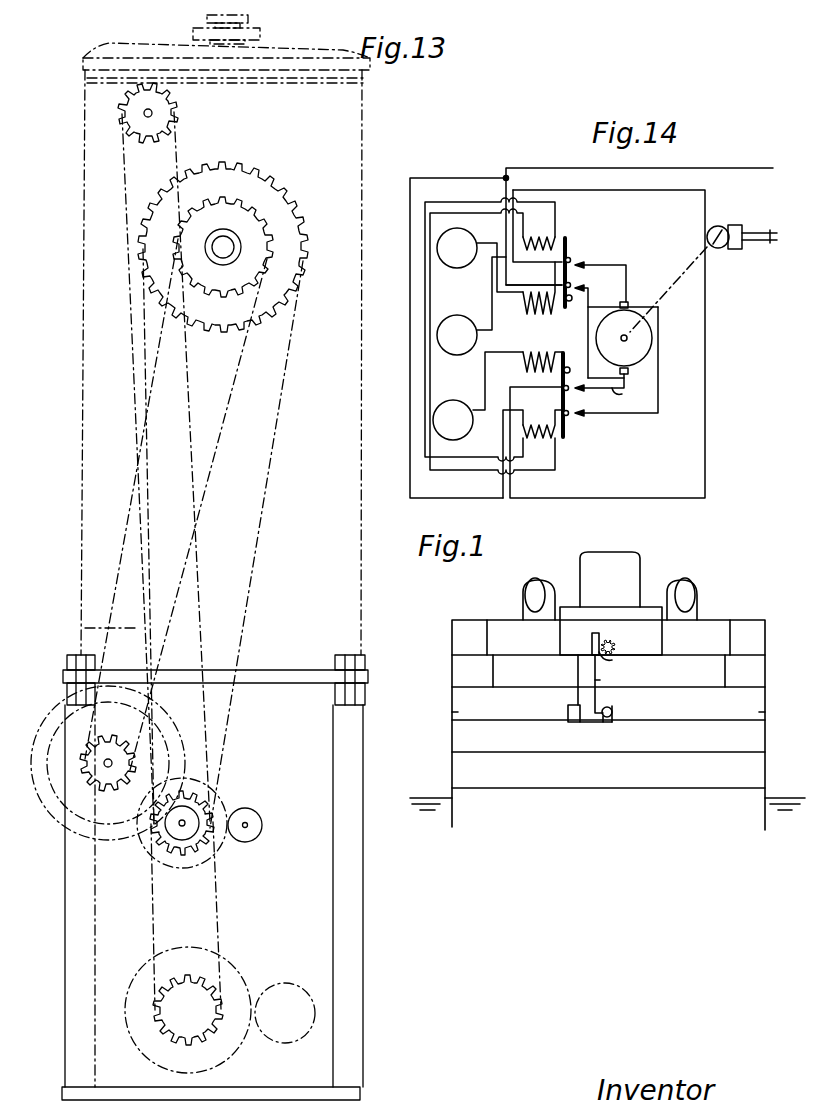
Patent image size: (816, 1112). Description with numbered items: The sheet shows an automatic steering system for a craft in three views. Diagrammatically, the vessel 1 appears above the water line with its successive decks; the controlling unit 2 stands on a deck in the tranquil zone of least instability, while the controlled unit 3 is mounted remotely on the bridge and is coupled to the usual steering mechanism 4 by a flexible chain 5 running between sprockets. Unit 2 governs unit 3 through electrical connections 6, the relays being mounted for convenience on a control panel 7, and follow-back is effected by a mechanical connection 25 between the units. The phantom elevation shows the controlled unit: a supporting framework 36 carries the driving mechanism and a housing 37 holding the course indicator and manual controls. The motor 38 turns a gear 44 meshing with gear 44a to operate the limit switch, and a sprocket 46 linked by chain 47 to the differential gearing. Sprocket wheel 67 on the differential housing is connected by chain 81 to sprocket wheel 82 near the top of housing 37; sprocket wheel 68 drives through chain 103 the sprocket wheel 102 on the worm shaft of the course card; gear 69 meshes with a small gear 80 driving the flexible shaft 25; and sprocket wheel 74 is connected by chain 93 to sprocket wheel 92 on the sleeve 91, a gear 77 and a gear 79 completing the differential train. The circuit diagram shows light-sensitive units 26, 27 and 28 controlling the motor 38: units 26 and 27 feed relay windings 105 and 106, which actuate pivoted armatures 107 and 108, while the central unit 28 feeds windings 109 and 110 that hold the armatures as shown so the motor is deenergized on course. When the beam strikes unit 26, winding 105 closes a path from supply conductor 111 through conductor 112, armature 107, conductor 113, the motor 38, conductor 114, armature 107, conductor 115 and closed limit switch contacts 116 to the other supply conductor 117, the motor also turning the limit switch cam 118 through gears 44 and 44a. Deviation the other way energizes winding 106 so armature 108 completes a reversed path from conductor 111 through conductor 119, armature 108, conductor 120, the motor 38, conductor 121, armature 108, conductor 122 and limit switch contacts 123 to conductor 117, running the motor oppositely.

In FIG. 1, the vessel 1 is at (729, 620).
In FIG. 1, the controlling unit 2 is at (613, 712).
In FIG. 1, the controlled unit 3 is at (598, 635).
In FIG. 1, the steering mechanism 4 is at (616, 647).
In FIG. 1, the flexible chain 5 is at (606, 658).
In FIG. 1, the electrical connections 6 is at (578, 675).
In FIG. 1, the control panel 7 is at (568, 711).
In FIG. 1, the mechanical connection 25 is at (600, 684).
In FIG. 14, the light-sensitive unit 26 is at (457, 268).
In FIG. 14, the light-sensitive unit 27 is at (462, 396).
In FIG. 14, the central light-sensitive unit 28 is at (460, 315).
In FIG. 13, the supporting framework 36 is at (362, 965).
In FIG. 13, the housing 37 is at (82, 425).
In FIG. 14, the motor 38 is at (628, 330).
In FIG. 13, the gear 44 is at (238, 1057).
In FIG. 13, the gear 44a is at (297, 977).
In FIG. 13, the sprocket 46 is at (203, 992).
In FIG. 13, the chain 47 is at (220, 905).
In FIG. 13, the sprocket wheel 67 is at (200, 793).
In FIG. 13, the sprocket wheel 68 is at (188, 830).
In FIG. 13, the gear 69 is at (220, 798).
In FIG. 13, the sprocket wheel 74 is at (111, 740).
In FIG. 13, the gear 77 is at (47, 738).
In FIG. 13, the gear 79 is at (53, 710).
In FIG. 13, the small gear 80 is at (263, 823).
In FIG. 13, the chain 81 is at (253, 583).
In FIG. 13, the sprocket wheel 82 is at (253, 180).
In FIG. 13, the sleeve 91 is at (226, 245).
In FIG. 13, the sprocket wheel 92 is at (243, 218).
In FIG. 13, the chain 93 is at (208, 478).
In FIG. 13, the sprocket wheel 102 is at (179, 113).
In FIG. 13, the chain 103 is at (197, 577).
In FIG. 14, the relay winding 105 is at (527, 318).
In FIG. 14, the relay winding 106 is at (547, 357).
In FIG. 14, the pivoted armature 107 is at (572, 262).
In FIG. 14, the pivoted armature 108 is at (570, 399).
In FIG. 14, the relay winding 109 is at (546, 240).
In FIG. 14, the relay winding 110 is at (553, 448).
In FIG. 14, the supply conductor 111 is at (736, 170).
In FIG. 14, the conductor 112 is at (534, 277).
In FIG. 14, the conductor 113 is at (591, 306).
In FIG. 14, the conductor 114 is at (628, 265).
In FIG. 14, the conductor 115 is at (612, 190).
In FIG. 14, the limit switch contacts 116 is at (742, 232).
In FIG. 14, the supply conductor 117 is at (783, 242).
In FIG. 14, the limit switch cam 118 is at (722, 250).
In FIG. 14, the conductor 119 is at (410, 310).
In FIG. 14, the conductor 120 is at (620, 414).
In FIG. 14, the conductor 121 is at (624, 390).
In FIG. 14, the conductor 122 is at (582, 498).
In FIG. 14, the limit switch contacts 123 is at (745, 248).